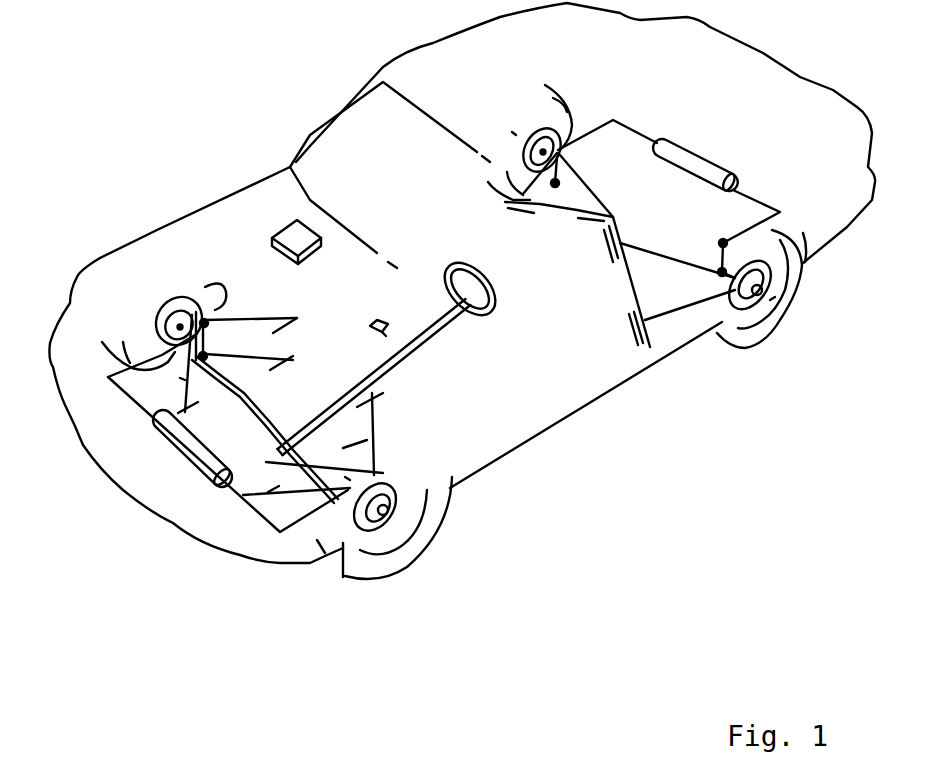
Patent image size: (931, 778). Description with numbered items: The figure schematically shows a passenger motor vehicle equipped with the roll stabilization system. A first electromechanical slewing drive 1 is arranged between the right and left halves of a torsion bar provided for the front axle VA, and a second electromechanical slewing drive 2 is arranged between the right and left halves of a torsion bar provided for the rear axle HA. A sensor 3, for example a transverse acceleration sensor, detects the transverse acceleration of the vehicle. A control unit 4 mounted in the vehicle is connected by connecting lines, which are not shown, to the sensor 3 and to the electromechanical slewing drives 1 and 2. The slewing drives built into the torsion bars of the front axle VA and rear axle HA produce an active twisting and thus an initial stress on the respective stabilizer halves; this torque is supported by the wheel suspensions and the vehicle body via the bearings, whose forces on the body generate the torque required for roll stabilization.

The first electromechanical slewing drive 1 is at (172, 448).
The second electromechanical slewing drive 2 is at (702, 180).
The sensor 3 is at (387, 332).
The control unit 4 is at (283, 227).
The rear axle HA is at (666, 258).
The front axle VA is at (240, 413).